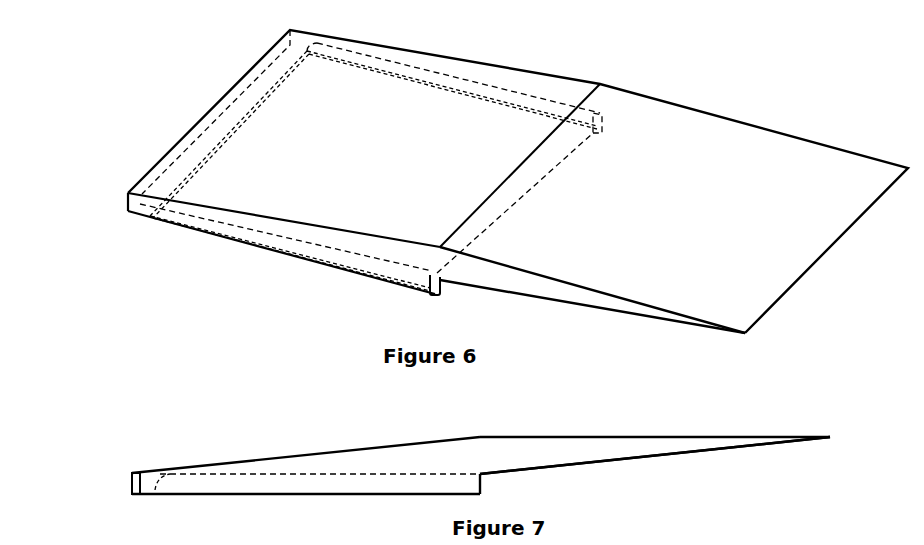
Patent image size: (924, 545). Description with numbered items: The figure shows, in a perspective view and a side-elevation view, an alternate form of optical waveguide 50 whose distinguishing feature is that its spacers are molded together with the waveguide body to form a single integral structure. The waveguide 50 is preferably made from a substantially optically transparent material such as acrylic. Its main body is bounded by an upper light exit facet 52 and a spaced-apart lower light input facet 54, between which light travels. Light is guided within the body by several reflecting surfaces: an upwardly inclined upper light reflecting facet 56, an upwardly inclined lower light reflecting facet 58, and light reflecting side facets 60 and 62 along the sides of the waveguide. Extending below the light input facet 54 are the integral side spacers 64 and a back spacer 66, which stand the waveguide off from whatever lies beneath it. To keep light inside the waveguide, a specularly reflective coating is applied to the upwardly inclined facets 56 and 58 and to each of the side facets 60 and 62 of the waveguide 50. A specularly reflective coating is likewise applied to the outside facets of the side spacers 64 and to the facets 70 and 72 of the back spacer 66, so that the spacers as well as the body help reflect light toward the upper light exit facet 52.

In FIG. 6, the optical waveguide 50 is at (212, 58).
In FIG. 7, the optical waveguide 50 is at (215, 432).
In FIG. 6, the upper light exit facet 52 is at (748, 262).
In FIG. 7, the upper light exit facet 52 is at (655, 437).
In FIG. 6, the lower light input facet 54 is at (433, 257).
In FIG. 7, the lower light input facet 54 is at (380, 478).
In FIG. 6, the upwardly inclined upper light reflecting facet 56 is at (280, 132).
In FIG. 7, the upwardly inclined upper light reflecting facet 56 is at (310, 455).
In FIG. 6, the upwardly inclined lower light reflecting facet 58 is at (577, 303).
In FIG. 7, the upwardly inclined lower light reflecting facet 58 is at (648, 457).
In FIG. 6, the light reflecting side facet 60 is at (498, 273).
In FIG. 7, the light reflecting side facet 60 is at (536, 453).
In FIG. 6, the light reflecting side facet 62 is at (610, 100).
In FIG. 6, the side spacers 64 is at (310, 247).
In FIG. 7, the side spacers 64 is at (305, 483).
In FIG. 6, the back spacer 66 is at (137, 208).
In FIG. 7, the back spacer 66 is at (140, 486).
In FIG. 7, the facet of the back spacer 70 is at (130, 483).
In FIG. 7, the facet of the back spacer 72 is at (162, 480).